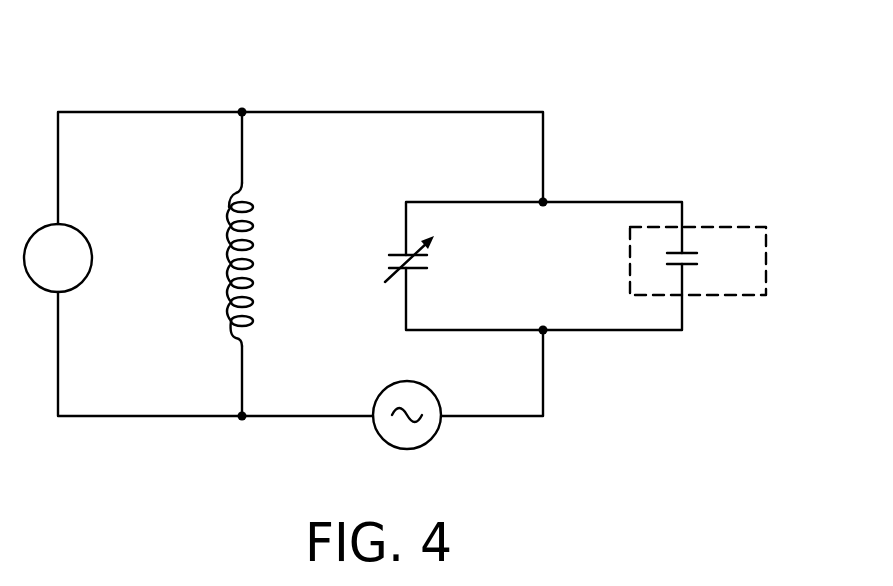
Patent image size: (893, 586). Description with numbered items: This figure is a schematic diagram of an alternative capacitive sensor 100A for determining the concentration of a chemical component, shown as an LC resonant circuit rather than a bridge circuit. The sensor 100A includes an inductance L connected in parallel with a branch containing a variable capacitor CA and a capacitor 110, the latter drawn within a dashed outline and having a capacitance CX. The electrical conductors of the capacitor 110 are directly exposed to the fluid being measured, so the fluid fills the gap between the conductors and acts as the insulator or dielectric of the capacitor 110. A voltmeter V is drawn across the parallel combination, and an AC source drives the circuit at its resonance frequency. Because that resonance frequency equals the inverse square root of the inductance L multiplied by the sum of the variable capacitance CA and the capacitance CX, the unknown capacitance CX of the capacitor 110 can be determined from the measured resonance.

The sensor 100A is at (115, 85).
The capacitor 110 is at (766, 236).
The inductance L is at (251, 264).
The voltmeter V is at (58, 258).
The variable capacitor CA is at (387, 260).
The capacitance CX is at (701, 262).